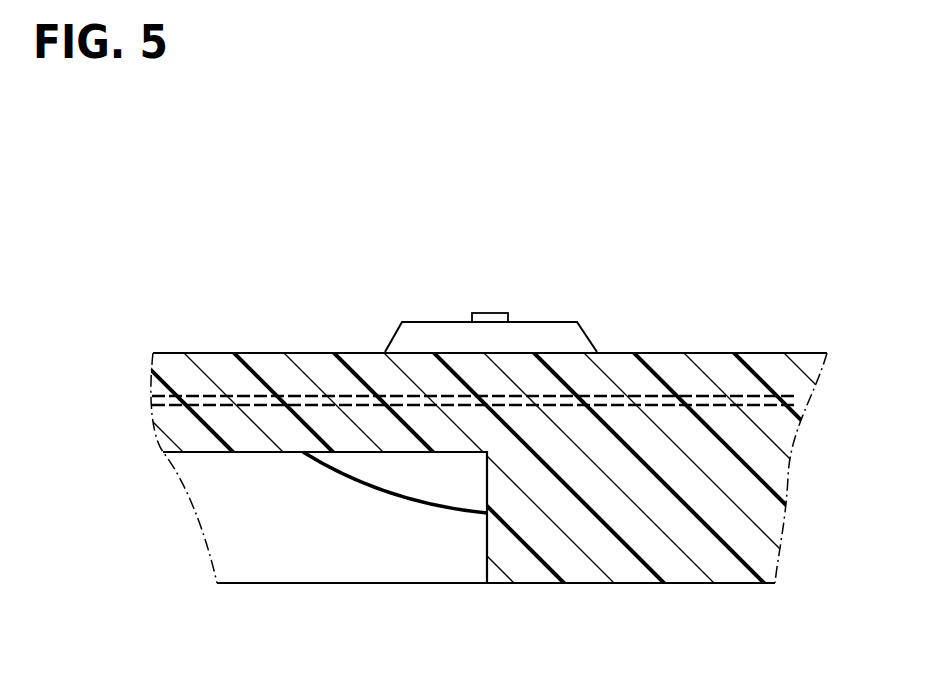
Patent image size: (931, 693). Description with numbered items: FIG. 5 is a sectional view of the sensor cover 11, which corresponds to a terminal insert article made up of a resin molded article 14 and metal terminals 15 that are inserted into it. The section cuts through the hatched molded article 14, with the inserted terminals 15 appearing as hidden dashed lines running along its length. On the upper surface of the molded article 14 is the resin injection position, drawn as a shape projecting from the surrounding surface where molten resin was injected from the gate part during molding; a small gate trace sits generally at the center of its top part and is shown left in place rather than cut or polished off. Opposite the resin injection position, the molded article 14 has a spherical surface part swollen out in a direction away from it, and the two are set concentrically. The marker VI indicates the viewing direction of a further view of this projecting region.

The sensor cover 11 is at (465, 437).
The molded article 14 is at (263, 362).
The terminal 15 is at (308, 397).
The section view indicator VI is at (492, 234).